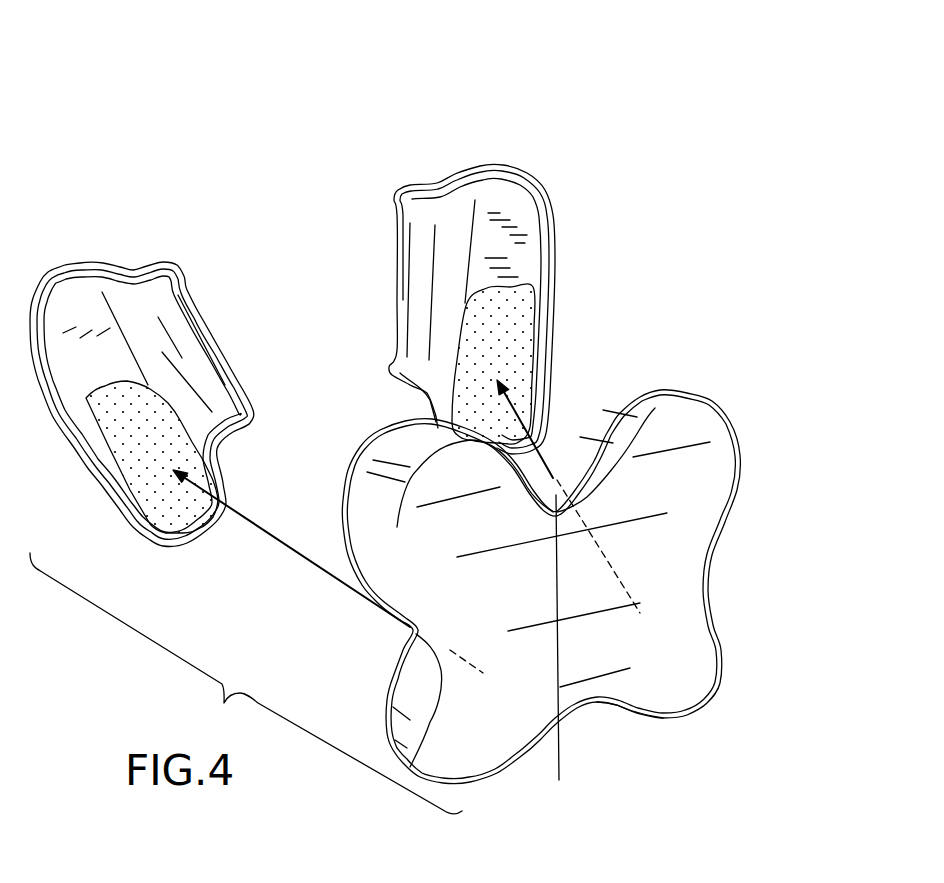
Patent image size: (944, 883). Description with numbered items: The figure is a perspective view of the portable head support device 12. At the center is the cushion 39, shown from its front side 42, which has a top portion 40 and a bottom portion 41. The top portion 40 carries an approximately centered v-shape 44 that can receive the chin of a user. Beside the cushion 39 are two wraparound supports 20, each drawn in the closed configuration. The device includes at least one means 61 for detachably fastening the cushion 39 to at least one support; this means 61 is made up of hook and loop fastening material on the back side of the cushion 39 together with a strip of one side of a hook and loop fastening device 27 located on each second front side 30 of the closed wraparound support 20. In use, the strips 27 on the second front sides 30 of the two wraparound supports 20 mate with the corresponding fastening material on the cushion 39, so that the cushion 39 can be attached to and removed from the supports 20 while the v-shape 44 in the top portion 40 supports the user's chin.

The portable head support device 12 is at (212, 125).
The wraparound support 20 is at (241, 346).
The means for detachably fastening the cushion to at least one support 61 is at (371, 325).
The second front side 30 is at (427, 290).
The strip of one side of a hook and loop fastening device 27 is at (510, 320).
The cushion 39 is at (757, 396).
The top portion 40 is at (655, 408).
The front side 42 is at (675, 560).
The bottom portion 41 is at (610, 710).
The v-shape 44 is at (563, 656).